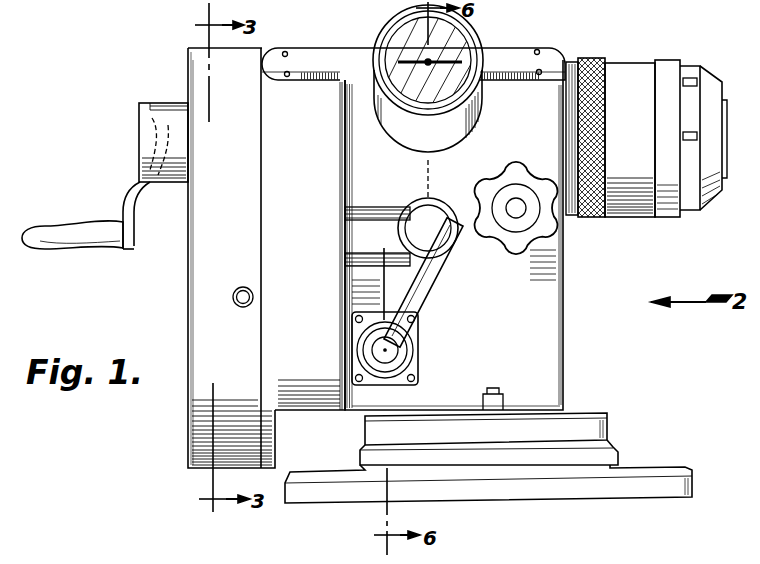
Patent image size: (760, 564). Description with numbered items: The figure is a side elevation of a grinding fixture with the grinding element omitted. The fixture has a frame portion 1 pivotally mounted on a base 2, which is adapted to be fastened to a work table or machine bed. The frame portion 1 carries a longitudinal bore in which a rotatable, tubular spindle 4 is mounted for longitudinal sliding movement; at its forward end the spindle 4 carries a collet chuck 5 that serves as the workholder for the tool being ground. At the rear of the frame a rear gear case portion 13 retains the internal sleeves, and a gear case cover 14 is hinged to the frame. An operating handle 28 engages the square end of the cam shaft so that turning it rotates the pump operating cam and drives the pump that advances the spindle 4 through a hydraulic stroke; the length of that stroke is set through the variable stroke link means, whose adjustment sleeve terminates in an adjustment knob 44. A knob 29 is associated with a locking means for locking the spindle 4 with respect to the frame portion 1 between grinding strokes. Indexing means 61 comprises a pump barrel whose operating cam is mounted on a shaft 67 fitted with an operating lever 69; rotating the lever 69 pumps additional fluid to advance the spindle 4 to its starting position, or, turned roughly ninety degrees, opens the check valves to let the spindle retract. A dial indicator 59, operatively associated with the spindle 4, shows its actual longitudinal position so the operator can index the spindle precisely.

The frame portion 1 is at (454, 235).
The base 2 is at (488, 458).
The spindle 4 is at (139, 130).
The collet chuck 5 is at (728, 128).
The rear gear case portion 13 is at (310, 245).
The gear case cover 14 is at (231, 258).
The operating handle 28 is at (121, 208).
The knob 29 is at (526, 180).
The adjustment knob 44 is at (428, 209).
The dial indicator 59 is at (460, 52).
The indexing means 61 is at (348, 342).
The shaft 67 is at (388, 350).
The operating lever 69 is at (428, 300).